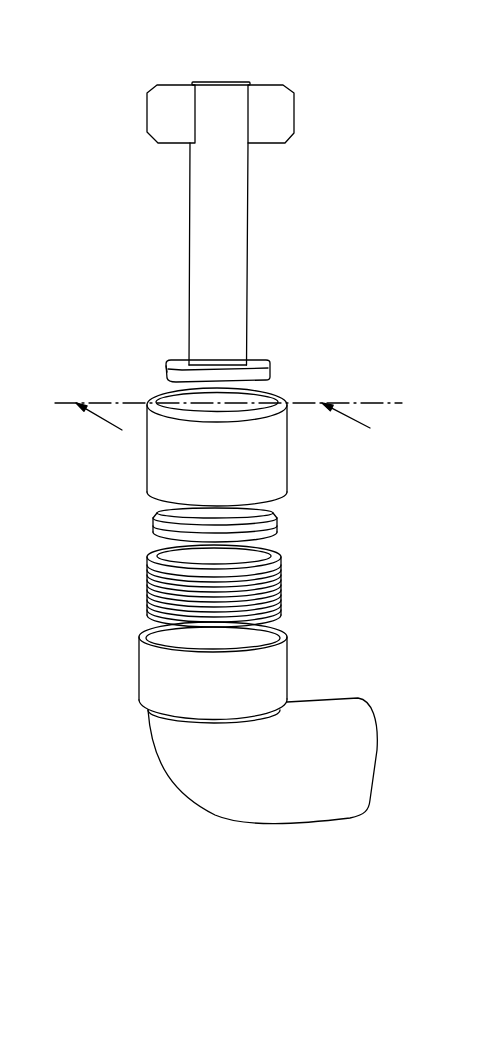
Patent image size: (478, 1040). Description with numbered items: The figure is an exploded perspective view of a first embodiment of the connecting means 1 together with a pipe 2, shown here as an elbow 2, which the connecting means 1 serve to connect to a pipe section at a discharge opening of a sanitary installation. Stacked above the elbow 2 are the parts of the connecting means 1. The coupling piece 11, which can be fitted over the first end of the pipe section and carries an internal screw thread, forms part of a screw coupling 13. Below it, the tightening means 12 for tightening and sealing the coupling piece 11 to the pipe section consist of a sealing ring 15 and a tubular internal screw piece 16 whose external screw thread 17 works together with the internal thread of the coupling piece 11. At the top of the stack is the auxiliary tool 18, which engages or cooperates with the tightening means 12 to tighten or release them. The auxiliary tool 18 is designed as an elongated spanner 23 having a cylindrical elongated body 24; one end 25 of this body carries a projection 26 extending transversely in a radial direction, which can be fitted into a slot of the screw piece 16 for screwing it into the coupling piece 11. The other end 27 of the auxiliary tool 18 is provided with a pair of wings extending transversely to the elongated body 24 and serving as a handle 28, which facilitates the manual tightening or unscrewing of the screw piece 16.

The connecting means 1 is at (378, 275).
The pipe 2 is at (178, 753).
The coupling piece 11 is at (247, 458).
The tightening means 12 is at (347, 533).
The screw coupling 13 is at (118, 477).
The sealing ring 15 is at (276, 542).
The tubular internal screw piece 16 is at (262, 593).
The external screw thread 17 is at (155, 590).
The auxiliary tool 18 is at (359, 88).
The elongated spanner 23 is at (257, 186).
The elongated body 24 is at (227, 194).
The end of the elongated body 25 is at (119, 367).
The projection 26 is at (272, 381).
The other end of the auxiliary tool 27 is at (115, 117).
The handle 28 is at (167, 97).